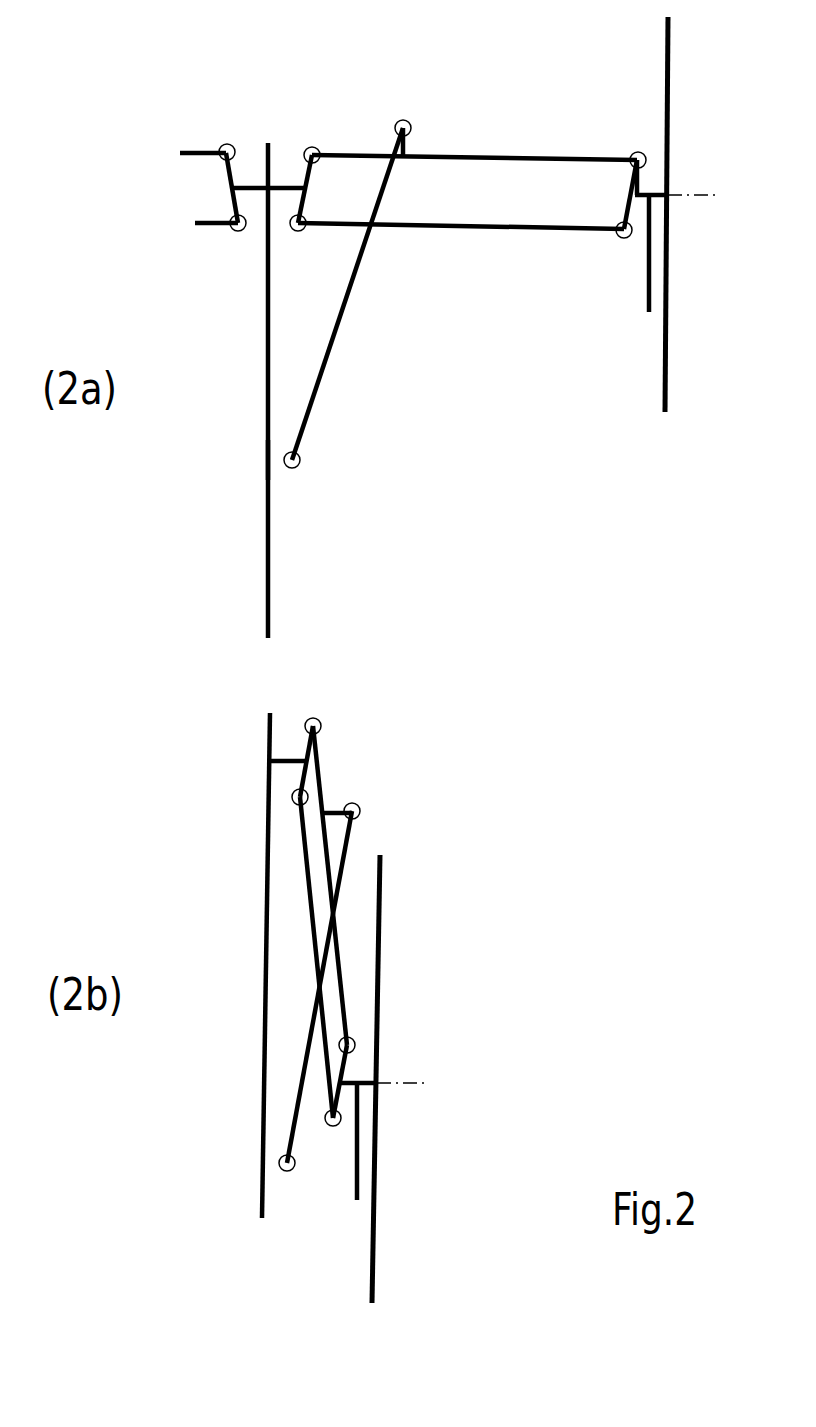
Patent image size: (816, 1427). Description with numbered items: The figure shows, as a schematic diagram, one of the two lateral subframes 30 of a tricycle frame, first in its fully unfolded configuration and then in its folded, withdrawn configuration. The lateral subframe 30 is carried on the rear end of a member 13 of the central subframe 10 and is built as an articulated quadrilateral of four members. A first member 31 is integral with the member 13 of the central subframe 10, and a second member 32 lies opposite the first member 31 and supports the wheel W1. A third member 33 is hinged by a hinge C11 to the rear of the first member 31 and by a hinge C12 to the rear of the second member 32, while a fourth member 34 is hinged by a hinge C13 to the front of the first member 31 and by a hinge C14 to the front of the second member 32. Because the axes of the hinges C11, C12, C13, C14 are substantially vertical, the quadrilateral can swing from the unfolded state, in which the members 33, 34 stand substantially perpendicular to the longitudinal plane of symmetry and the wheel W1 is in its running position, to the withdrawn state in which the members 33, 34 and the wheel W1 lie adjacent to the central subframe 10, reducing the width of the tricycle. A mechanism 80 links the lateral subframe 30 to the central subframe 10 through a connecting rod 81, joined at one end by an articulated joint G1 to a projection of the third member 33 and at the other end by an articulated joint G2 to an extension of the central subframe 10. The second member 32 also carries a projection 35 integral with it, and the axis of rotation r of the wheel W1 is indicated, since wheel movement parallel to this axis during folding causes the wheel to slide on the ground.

In FIG. 2a, the central subframe 10 is at (250, 545).
In FIG. 2b, the central subframe 10 is at (254, 1088).
In FIG. 2a, the member 13 is at (266, 457).
In FIG. 2a, the lateral subframe 30 is at (180, 177).
In FIG. 2a, the first member 31 is at (310, 200).
In FIG. 2b, the first member 31 is at (300, 772).
In FIG. 2a, the second member 32 is at (633, 188).
In FIG. 2b, the second member 32 is at (345, 1072).
In FIG. 2a, the third member 33 is at (512, 155).
In FIG. 2b, the third member 33 is at (325, 845).
In FIG. 2a, the fourth member 34 is at (455, 231).
In FIG. 2b, the fourth member 34 is at (310, 905).
In FIG. 2a, the projection 35 is at (648, 283).
In FIG. 2b, the projection 35 is at (357, 1200).
In FIG. 2a, the mechanism 80 is at (317, 392).
In FIG. 2a, the connecting rod 81 is at (343, 315).
In FIG. 2b, the connecting rod 81 is at (342, 890).
In FIG. 2a, the articulated joint G1 is at (400, 121).
In FIG. 2b, the articulated joint G1 is at (358, 805).
In FIG. 2a, the articulated joint G2 is at (300, 470).
In FIG. 2b, the articulated joint G2 is at (288, 1172).
In FIG. 2a, the hinge C11 is at (309, 147).
In FIG. 2b, the hinge C11 is at (310, 717).
In FIG. 2a, the hinge C12 is at (633, 153).
In FIG. 2b, the hinge C12 is at (355, 1040).
In FIG. 2a, the hinge C13 is at (298, 232).
In FIG. 2b, the hinge C13 is at (292, 800).
In FIG. 2a, the hinge C14 is at (619, 237).
In FIG. 2b, the hinge C14 is at (333, 1127).
In FIG. 2a, the wheel W1 is at (669, 145).
In FIG. 2b, the wheel W1 is at (378, 1178).
In FIG. 2a, the axis of rotation r is at (688, 197).
In FIG. 2b, the axis of rotation r is at (393, 1085).